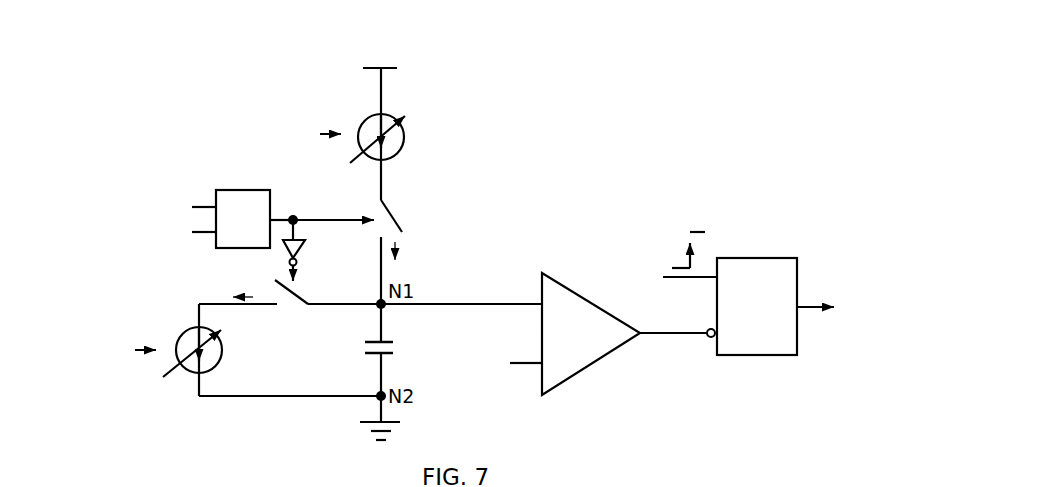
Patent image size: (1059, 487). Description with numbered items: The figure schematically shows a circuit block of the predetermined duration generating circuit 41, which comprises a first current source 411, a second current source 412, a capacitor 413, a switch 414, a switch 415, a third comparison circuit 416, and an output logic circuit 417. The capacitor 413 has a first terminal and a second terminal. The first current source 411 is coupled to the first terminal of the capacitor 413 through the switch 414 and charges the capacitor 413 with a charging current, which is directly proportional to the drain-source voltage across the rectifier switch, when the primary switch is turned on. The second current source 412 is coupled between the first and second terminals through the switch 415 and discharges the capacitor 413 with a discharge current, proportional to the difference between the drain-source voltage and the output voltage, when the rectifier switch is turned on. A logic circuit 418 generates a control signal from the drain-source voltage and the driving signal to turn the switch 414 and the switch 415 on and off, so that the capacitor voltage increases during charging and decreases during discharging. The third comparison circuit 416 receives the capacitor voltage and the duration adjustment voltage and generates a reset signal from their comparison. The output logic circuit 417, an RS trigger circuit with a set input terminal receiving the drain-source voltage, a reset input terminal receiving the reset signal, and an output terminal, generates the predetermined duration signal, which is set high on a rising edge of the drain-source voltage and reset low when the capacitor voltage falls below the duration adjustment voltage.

The predetermined duration generating circuit 41 is at (765, 103).
The first current source 411 is at (404, 147).
The second current source 412 is at (218, 362).
The capacitor 413 is at (398, 349).
The switch 414 is at (424, 210).
The switch 415 is at (302, 300).
The third comparison circuit 416 is at (572, 290).
The output logic circuit 417 is at (767, 258).
The logic circuit 418 is at (261, 230).